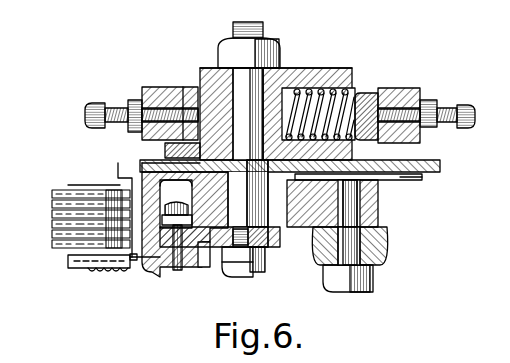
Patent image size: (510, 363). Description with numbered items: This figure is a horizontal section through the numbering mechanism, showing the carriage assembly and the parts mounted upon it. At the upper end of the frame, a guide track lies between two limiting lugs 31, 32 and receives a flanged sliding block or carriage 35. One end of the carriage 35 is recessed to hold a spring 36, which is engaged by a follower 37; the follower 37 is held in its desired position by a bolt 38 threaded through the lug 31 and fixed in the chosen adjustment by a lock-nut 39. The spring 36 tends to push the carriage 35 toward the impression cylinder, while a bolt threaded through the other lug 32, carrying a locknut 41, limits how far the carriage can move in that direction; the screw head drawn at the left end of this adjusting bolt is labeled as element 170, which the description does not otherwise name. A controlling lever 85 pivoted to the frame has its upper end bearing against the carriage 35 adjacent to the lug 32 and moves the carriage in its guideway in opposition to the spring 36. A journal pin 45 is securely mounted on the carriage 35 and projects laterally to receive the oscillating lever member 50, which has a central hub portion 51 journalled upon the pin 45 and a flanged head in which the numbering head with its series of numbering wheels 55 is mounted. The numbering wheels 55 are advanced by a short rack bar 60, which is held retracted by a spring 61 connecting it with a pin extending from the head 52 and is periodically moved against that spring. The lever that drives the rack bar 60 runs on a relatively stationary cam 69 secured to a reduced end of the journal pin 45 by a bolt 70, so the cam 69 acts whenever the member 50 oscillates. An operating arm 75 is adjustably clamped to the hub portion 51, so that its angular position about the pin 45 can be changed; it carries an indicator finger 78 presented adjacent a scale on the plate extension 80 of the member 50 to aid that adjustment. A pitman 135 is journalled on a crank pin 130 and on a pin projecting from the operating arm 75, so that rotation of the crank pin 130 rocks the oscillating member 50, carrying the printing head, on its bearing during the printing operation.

The limiting lug 31 is at (404, 92).
The limiting lug 32 is at (166, 87).
The sliding block or carriage 35 is at (284, 68).
The spring 36 is at (352, 103).
The follower 37 is at (372, 100).
The bolt 38 is at (462, 105).
The lock-nut 39 is at (432, 126).
The locknut 41 is at (135, 100).
The journal pin 45 is at (276, 124).
The oscillating lever member 50 is at (148, 162).
The central hub portion 51 is at (280, 240).
The head 52 is at (118, 172).
The numbering wheels 55 is at (52, 226).
The rack bar 60 is at (158, 280).
The spring 61 is at (116, 276).
The cam 69 is at (216, 257).
The bolt 70 is at (262, 273).
The operating arm 75 is at (378, 212).
The indicator finger 78 is at (422, 178).
The plate extension 80 is at (440, 168).
The controlling lever 85 is at (165, 149).
The crank pin 130 is at (368, 272).
The pitman 135 is at (392, 246).
The adjusting screw 170 is at (108, 104).